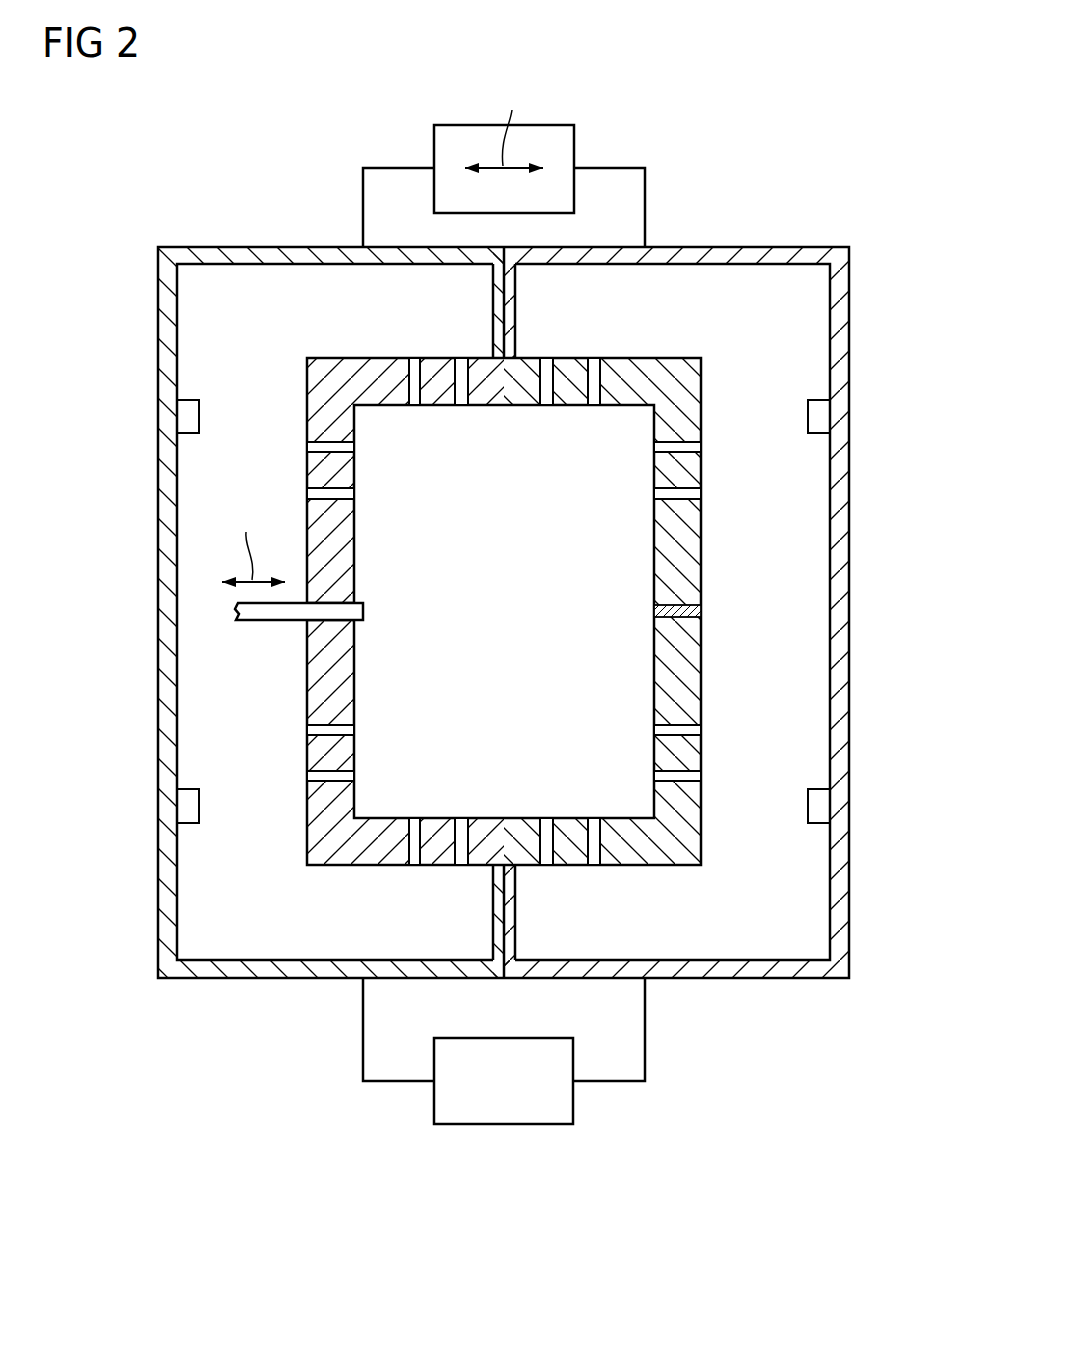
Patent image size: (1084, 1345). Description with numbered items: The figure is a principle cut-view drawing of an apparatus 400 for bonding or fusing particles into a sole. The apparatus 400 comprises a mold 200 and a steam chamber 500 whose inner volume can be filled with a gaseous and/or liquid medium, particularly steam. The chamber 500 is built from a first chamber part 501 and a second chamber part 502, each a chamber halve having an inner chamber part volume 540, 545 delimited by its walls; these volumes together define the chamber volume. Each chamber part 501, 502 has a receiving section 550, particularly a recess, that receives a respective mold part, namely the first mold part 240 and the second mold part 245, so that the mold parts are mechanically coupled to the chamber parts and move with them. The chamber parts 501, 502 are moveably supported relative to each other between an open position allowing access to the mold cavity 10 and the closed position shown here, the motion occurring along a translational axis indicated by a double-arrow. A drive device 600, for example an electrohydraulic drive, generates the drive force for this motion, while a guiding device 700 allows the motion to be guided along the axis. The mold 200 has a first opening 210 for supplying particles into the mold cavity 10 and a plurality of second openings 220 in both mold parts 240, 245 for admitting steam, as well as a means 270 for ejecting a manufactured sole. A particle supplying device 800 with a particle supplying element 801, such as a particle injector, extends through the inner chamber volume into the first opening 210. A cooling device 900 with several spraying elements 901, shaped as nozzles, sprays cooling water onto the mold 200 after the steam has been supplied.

The mold cavity 10 is at (522, 590).
The mold 200 is at (503, 652).
The first opening 210 is at (337, 622).
The second openings 220 is at (413, 398).
The first mold part 240 is at (342, 367).
The second mold part 245 is at (654, 367).
The means for ejecting 270 is at (657, 611).
The apparatus 400 is at (502, 643).
The chamber 500 is at (502, 619).
The first chamber part 501 is at (239, 256).
The second chamber part 502 is at (778, 256).
The inner chamber part volume 540 is at (217, 933).
The inner chamber part volume 545 is at (795, 903).
The receiving section 550 is at (294, 834).
The drive device 600 is at (576, 146).
The guiding device 700 is at (503, 1125).
The particle supplying device 800 is at (275, 618).
The particle supplying element 801 is at (272, 612).
The cooling device 900 is at (502, 588).
The spraying elements 901 is at (188, 412).